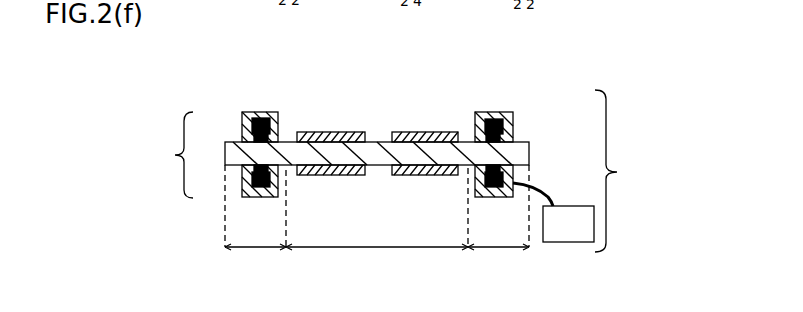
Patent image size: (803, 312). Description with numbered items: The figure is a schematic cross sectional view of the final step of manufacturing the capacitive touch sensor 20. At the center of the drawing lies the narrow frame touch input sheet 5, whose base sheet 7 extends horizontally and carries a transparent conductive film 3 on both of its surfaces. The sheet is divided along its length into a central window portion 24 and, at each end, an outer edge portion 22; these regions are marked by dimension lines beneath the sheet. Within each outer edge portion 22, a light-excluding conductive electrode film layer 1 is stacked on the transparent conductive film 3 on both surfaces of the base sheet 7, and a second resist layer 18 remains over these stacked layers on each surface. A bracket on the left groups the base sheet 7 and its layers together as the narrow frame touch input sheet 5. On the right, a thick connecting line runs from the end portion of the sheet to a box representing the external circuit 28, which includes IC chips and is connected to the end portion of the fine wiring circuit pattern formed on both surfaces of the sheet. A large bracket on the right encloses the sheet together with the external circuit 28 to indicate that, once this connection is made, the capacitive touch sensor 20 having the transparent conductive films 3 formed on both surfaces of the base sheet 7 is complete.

The light-excluding conductive electrode film layer 1 is at (252, 183).
The transparent conductive film 3 is at (252, 169).
The narrow frame touch input sheet 5 is at (172, 155).
The base sheet 7 is at (525, 157).
The second resist layer 18 is at (266, 198).
The capacitive touch sensor 20 is at (623, 171).
The outer edge portion 22 is at (377, 219).
The central window portion 24 is at (377, 258).
The external circuit 28 is at (566, 232).